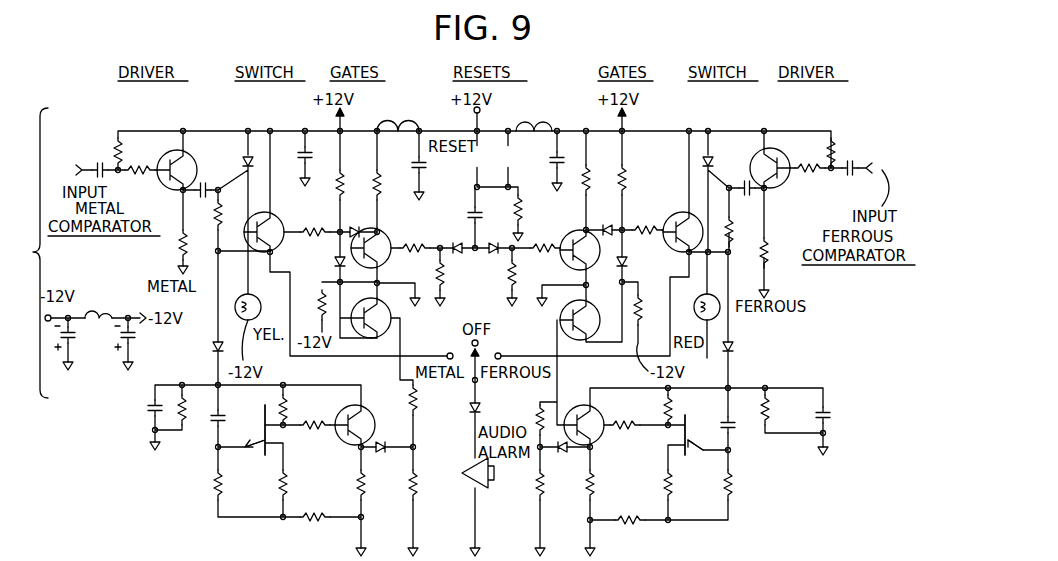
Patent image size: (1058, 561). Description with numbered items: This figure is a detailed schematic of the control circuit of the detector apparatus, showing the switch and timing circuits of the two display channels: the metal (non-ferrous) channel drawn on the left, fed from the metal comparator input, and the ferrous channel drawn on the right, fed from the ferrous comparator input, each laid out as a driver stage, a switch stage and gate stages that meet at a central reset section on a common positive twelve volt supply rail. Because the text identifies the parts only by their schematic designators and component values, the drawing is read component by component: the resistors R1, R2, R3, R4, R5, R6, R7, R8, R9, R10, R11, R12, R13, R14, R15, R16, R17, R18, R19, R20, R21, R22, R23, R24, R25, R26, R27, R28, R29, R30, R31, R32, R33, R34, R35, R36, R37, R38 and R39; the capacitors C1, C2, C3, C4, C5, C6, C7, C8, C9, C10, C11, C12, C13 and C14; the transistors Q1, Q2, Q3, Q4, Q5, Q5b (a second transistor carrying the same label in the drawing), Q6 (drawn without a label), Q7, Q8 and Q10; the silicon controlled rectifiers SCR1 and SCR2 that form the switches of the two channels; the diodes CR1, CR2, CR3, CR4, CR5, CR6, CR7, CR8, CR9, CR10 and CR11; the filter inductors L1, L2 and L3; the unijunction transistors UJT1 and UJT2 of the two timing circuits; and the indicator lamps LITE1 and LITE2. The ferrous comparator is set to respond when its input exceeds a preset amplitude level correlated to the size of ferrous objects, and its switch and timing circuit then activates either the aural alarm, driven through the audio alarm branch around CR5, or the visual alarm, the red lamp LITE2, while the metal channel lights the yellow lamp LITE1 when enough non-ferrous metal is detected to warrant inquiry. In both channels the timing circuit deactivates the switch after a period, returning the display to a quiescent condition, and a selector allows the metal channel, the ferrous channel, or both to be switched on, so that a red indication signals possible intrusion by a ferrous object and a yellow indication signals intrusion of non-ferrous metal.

The resistor R1 is at (129, 153).
The resistor R2 is at (140, 180).
The resistor R3 is at (182, 245).
The resistor R4 is at (229, 215).
The resistor R5 is at (315, 223).
The resistor R6 is at (351, 185).
The resistor R7 is at (388, 185).
The resistor R8 is at (415, 239).
The resistor R9 is at (452, 275).
The resistor R10 is at (313, 308).
The resistor R11 is at (429, 400).
The resistor R12 is at (429, 485).
The resistor R13 is at (345, 485).
The resistor R14 is at (317, 528).
The resistor R15 is at (267, 485).
The resistor R16 is at (201, 485).
The resistor R17 is at (192, 407).
The resistor R18 is at (524, 485).
The resistor R19 is at (550, 418).
The resistor R20 is at (607, 485).
The resistor R21 is at (629, 530).
The resistor R22 is at (744, 485).
The resistor R23 is at (684, 485).
The resistor R24 is at (630, 435).
The resistor R25 is at (684, 410).
The resistor R26 is at (314, 414).
The resistor R27 is at (266, 409).
The resistor R28 is at (781, 410).
The resistor R29 is at (529, 275).
The resistor R30 is at (544, 239).
The resistor R31 is at (535, 210).
The resistor R32 is at (601, 171).
The resistor R33 is at (639, 180).
The resistor R34 is at (646, 221).
The resistor R35 is at (649, 307).
The resistor R36 is at (739, 236).
The resistor R37 is at (774, 251).
The resistor R38 is at (807, 180).
The resistor R39 is at (847, 153).
The capacitor C1 is at (86, 159).
The capacitor C2 is at (202, 199).
The capacitor C3 is at (315, 158).
The capacitor C4 is at (140, 409).
The capacitor C5 is at (228, 420).
The capacitor C6 is at (428, 172).
The capacitor C7 is at (486, 216).
The capacitor C8 is at (567, 160).
The capacitor C9 is at (739, 426).
The capacitor C10 is at (748, 196).
The capacitor C11 is at (857, 180).
The capacitor C12 is at (839, 418).
The capacitor C13 is at (83, 337).
The capacitor C14 is at (143, 337).
The transistor Q1 is at (177, 170).
The transistor Q2 is at (277, 234).
The transistor Q3 is at (385, 251).
The transistor Q4 is at (369, 310).
The transistor Q5 is at (589, 314).
The transistor (second Q5 label) Q5b is at (362, 418).
The transistor (unlabeled) Q6 is at (580, 250).
The transistor Q7 is at (683, 224).
The transistor Q8 is at (778, 164).
The transistor Q10 is at (601, 420).
The silicon controlled rectifier SCR1 is at (229, 155).
The silicon controlled rectifier SCR2 is at (730, 156).
The diode CR1 is at (196, 352).
The diode CR2 is at (321, 263).
The diode CR3 is at (357, 224).
The diode CR4 is at (389, 466).
The diode CR5 is at (490, 409).
The diode CR6 is at (455, 239).
The diode CR7 is at (496, 239).
The diode CR8 is at (639, 265).
The diode CR9 is at (745, 348).
The diode CR10 is at (603, 214).
The diode CR11 is at (566, 467).
The inductor L1 is at (398, 118).
The inductor L2 is at (534, 118).
The inductor L3 is at (98, 305).
The unijunction transistor UJT1 is at (283, 432).
The unijunction transistor UJT2 is at (689, 445).
The indicator lamp (yellow) LITE1 is at (258, 298).
The indicator lamp (red) LITE2 is at (696, 298).